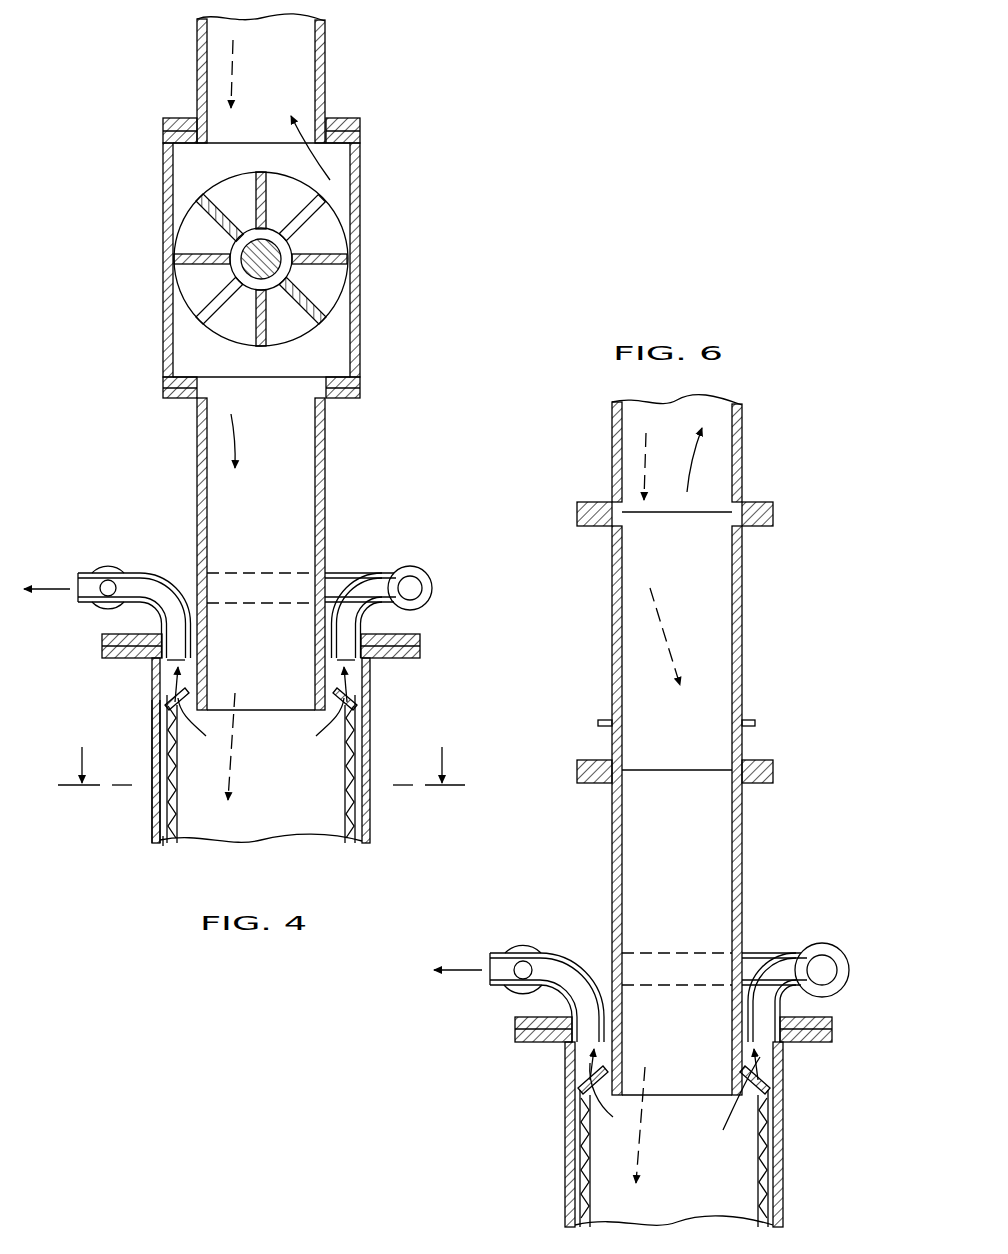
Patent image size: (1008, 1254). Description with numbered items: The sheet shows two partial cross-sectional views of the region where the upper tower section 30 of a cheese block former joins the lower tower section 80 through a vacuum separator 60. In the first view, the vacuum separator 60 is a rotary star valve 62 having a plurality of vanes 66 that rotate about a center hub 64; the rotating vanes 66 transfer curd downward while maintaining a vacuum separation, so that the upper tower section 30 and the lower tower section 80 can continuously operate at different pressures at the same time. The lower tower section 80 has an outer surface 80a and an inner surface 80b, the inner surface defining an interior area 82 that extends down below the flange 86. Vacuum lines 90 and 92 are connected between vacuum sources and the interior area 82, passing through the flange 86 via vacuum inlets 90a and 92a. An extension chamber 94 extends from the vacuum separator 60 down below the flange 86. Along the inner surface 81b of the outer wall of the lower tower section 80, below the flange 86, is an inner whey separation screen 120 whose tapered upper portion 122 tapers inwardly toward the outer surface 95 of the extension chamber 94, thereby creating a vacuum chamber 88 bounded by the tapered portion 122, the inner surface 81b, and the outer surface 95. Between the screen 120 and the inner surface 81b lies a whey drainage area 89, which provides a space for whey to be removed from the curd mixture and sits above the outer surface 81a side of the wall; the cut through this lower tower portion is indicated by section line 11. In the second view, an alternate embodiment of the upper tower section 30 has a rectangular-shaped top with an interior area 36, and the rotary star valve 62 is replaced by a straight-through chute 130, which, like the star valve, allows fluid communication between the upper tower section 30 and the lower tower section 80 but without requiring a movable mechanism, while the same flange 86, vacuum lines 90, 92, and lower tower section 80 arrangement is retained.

In FIG. 4, the upper tower section 30 is at (218, 64).
In FIG. 6, the upper tower section 30 is at (626, 458).
In FIG. 4, the vacuum separator 60 is at (124, 252).
In FIG. 6, the vacuum separator 60 is at (753, 599).
In FIG. 4, the rotary star valve 62 is at (237, 247).
In FIG. 4, the center hub 64 is at (230, 279).
In FIG. 4, the vanes 66 is at (323, 249).
In FIG. 4, the extension chamber 94 is at (310, 468).
In FIG. 4, the vacuum line 92 is at (393, 583).
In FIG. 4, the vacuum line 90 is at (93, 595).
In FIG. 4, the flange 86 is at (103, 652).
In FIG. 4, the vacuum inlet 90a is at (175, 665).
In FIG. 4, the vacuum inlet 92a is at (350, 661).
In FIG. 4, the outer surface of extension chamber 95 is at (206, 677).
In FIG. 4, the vacuum chamber 88 is at (178, 687).
In FIG. 4, the lower tower section 80 is at (187, 752).
In FIG. 6, the lower tower section 80 is at (743, 1131).
In FIG. 4, the tapered upper portion 122 is at (176, 700).
In FIG. 4, the inner whey separation screen 120 is at (177, 773).
In FIG. 4, the interior area 82 is at (277, 821).
In FIG. 6, the interior area 82 is at (689, 1181).
In FIG. 4, the inner surface 81b is at (166, 812).
In FIG. 4, the outer surface 81a is at (152, 832).
In FIG. 4, the whey drainage area 89 is at (164, 843).
In FIG. 4, the section line 11— 11 is at (261, 778).
In FIG. 6, the straight-through chute 130 is at (742, 642).
In FIG. 6, the interior area 36 is at (683, 741).
In FIG. 6, the outer surface 80a is at (783, 1192).
In FIG. 6, the inner surface 80b is at (775, 1157).